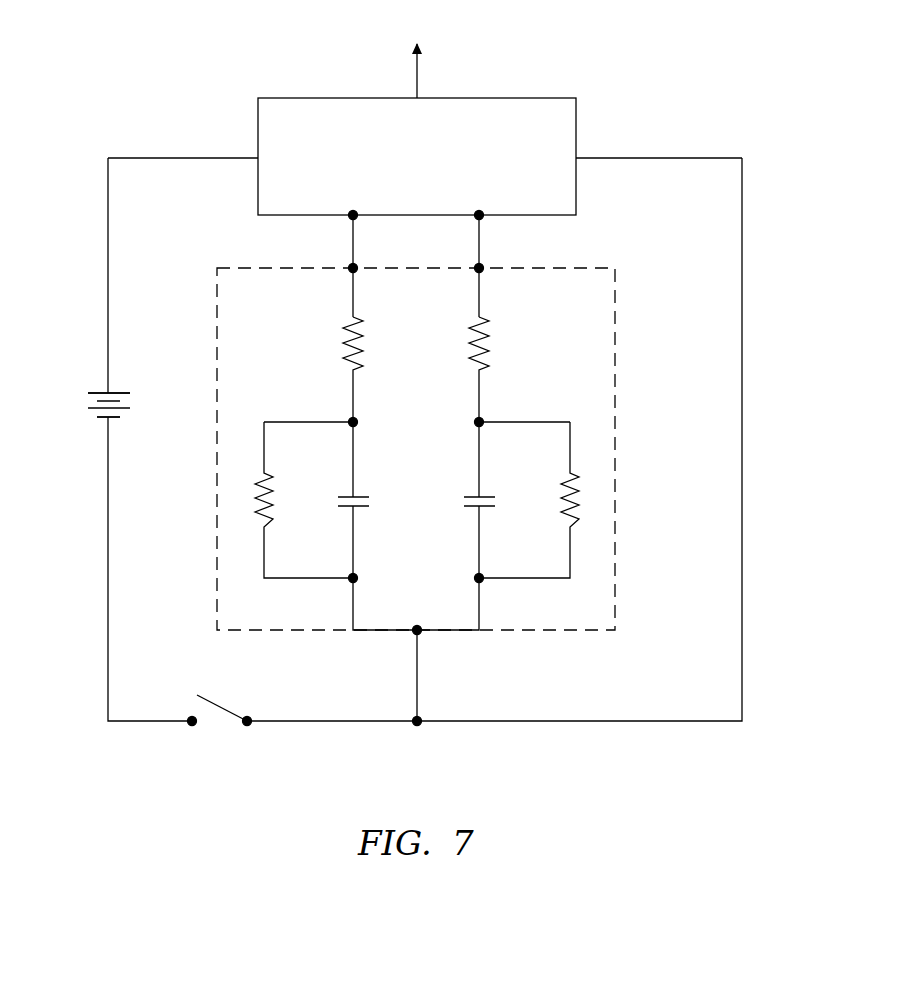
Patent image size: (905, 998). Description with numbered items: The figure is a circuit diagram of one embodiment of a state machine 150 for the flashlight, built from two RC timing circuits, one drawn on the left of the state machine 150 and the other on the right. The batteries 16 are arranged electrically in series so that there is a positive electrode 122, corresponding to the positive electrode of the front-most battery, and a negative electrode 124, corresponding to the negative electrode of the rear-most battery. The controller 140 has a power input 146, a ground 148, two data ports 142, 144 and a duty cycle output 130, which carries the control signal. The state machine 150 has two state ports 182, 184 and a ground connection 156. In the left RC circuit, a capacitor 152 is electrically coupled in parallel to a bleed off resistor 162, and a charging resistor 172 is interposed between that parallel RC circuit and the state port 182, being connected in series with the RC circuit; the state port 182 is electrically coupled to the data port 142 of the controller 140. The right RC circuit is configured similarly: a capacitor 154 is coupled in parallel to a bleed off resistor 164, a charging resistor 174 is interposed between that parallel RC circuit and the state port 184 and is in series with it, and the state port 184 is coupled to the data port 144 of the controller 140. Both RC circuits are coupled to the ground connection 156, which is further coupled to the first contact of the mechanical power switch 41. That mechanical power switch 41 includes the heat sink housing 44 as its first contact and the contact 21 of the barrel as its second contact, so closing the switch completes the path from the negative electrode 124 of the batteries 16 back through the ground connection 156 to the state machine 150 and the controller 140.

The batteries 16 is at (118, 383).
The contact of barrel 21 is at (193, 728).
The mechanical power switch 41 is at (196, 688).
The heat sink housing 44 is at (250, 726).
The positive electrode 122 is at (108, 390).
The negative electrode 124 is at (108, 419).
The duty cycle output 130 is at (416, 97).
The controller 140 is at (497, 98).
The data port 142 is at (350, 221).
The data port 144 is at (482, 221).
The power input 146 is at (258, 156).
The ground 148 is at (577, 157).
The state machine 150 is at (633, 326).
The capacitor 152 is at (337, 497).
The capacitor 154 is at (462, 497).
The ground connection 156 is at (413, 632).
The bleed off resistor 162 is at (257, 488).
The bleed off resistor 164 is at (576, 521).
The charging resistor 172 is at (346, 338).
The charging resistor 174 is at (488, 340).
The state port 182 is at (350, 272).
The state port 184 is at (483, 272).